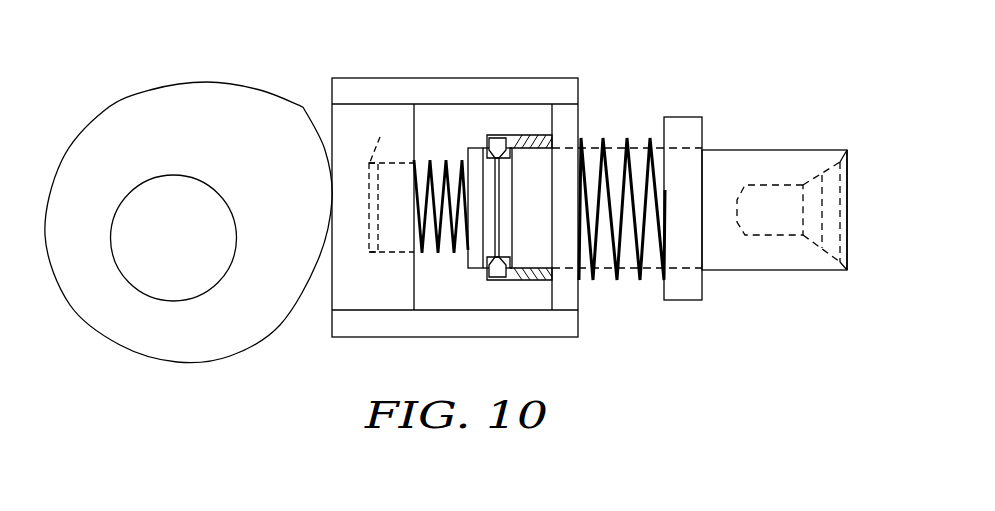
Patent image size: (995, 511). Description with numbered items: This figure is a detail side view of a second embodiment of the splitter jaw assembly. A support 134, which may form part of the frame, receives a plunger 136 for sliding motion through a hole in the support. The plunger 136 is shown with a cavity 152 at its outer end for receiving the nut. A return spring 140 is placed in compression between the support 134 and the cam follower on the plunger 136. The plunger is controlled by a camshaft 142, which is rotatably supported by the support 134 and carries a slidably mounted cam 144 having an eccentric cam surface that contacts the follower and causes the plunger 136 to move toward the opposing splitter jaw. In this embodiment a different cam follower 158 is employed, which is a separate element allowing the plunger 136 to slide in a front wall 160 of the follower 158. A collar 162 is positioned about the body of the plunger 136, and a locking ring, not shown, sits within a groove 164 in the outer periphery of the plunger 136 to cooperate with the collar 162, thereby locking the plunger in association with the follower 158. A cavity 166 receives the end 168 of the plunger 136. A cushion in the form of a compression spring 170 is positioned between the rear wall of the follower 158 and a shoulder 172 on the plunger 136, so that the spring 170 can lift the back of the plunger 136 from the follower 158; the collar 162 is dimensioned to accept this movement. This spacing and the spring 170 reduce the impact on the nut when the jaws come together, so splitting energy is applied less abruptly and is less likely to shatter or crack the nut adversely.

The support 134 is at (680, 117).
The plunger 136 is at (768, 150).
The return spring 140 is at (602, 135).
The camshaft 142 is at (228, 202).
The cam 144 is at (230, 82).
The cavity 152 is at (847, 202).
The cam follower 158 is at (487, 78).
The front wall 160 is at (578, 297).
The collar 162 is at (530, 135).
The groove 164 is at (503, 280).
The cavity 166 is at (391, 181).
The end 168 is at (375, 222).
The compression spring 170 is at (442, 257).
The shoulder 172 is at (468, 153).